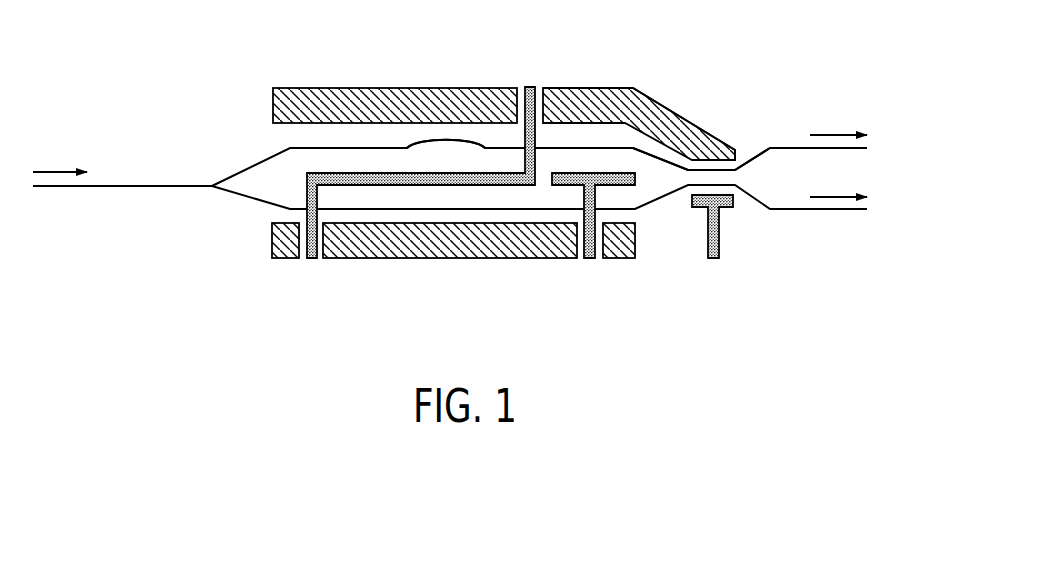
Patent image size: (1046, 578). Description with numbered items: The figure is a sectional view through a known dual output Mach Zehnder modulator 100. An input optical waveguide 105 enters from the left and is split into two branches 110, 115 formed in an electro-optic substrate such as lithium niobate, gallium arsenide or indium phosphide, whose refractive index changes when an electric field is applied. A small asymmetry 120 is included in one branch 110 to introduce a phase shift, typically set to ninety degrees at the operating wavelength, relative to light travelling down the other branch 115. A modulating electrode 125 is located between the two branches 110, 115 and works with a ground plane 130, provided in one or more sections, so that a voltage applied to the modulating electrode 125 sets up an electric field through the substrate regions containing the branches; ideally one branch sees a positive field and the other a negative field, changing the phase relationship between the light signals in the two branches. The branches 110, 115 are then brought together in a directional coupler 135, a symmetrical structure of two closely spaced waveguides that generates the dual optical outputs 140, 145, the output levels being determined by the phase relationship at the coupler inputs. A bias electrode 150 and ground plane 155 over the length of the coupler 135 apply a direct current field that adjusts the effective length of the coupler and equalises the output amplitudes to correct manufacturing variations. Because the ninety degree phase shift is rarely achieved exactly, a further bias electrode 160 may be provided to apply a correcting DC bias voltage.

The MZ modulator 100 is at (355, 294).
The input optical waveguide 105 is at (123, 182).
The first waveguide branch 110 is at (253, 163).
The second waveguide branch 115 is at (242, 198).
The asymmetry 120 is at (440, 139).
The modulating electrode 125 is at (382, 173).
The ground plane 130 is at (332, 89).
The directional coupler 135 is at (707, 118).
The first optical output 140 is at (802, 147).
The second optical output 145 is at (800, 210).
The bias electrode 150 is at (702, 208).
The ground plane 155 is at (720, 148).
The bias electrode 160 is at (588, 178).